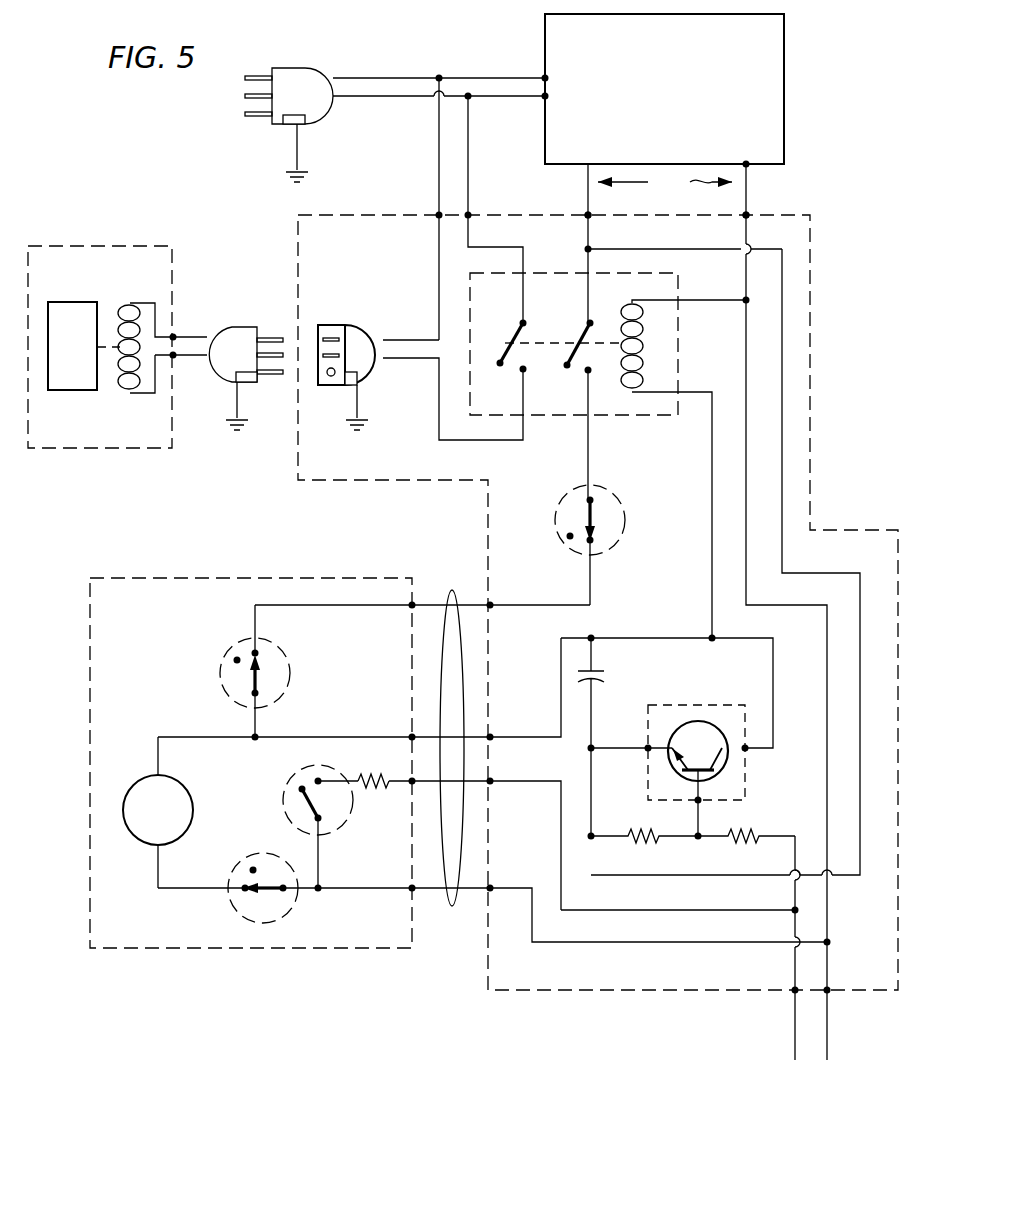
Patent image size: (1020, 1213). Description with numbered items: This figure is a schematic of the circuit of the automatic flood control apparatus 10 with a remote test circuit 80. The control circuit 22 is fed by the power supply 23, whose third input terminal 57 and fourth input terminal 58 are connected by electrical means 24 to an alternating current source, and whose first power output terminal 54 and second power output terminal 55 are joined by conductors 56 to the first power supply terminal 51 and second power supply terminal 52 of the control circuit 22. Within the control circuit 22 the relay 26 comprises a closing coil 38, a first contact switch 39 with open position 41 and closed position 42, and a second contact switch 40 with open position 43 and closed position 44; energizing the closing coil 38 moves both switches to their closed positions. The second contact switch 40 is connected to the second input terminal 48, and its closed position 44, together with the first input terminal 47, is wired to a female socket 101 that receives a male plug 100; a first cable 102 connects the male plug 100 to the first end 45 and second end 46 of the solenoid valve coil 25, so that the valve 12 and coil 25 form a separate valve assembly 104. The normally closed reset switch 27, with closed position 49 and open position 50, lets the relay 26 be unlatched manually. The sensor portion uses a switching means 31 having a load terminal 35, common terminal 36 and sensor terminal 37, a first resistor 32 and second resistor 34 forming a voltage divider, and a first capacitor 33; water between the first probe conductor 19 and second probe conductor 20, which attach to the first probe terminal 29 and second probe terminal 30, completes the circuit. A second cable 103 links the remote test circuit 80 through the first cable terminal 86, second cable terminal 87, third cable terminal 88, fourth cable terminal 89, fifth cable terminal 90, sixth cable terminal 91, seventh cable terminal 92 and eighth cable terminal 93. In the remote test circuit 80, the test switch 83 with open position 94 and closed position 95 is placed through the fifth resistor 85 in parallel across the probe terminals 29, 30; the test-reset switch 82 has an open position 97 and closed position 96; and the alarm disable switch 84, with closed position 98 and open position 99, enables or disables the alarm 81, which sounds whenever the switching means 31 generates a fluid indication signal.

The automatic flood control apparatus 10 is at (464, 1022).
The valve assembly 12 is at (84, 361).
The first probe conductor 19 is at (830, 1060).
The second probe conductor 20 is at (790, 1060).
The control circuit 22 is at (812, 423).
The power supply 23 is at (690, 101).
The electrical means 24 is at (305, 74).
The solenoid valve coil 25 is at (118, 310).
The relay 26 is at (604, 417).
The reset switch 27 is at (628, 530).
The first probe terminal 29 is at (829, 994).
The second probe terminal 30 is at (793, 993).
The switching means 31 is at (707, 722).
The first resistor 32 is at (655, 850).
The first capacitor 33 is at (604, 680).
The second resistor 34 is at (745, 850).
The load terminal 35 is at (748, 747).
The common terminal 36 is at (648, 746).
The sensor terminal 37 is at (700, 801).
The closing coil 38 is at (645, 350).
The first contact switch 39 is at (582, 349).
The second contact switch 40 is at (513, 349).
The open position 41 is at (569, 368).
The closed position 42 is at (590, 373).
The open position 43 is at (503, 366).
The closed position 44 is at (524, 372).
The first end 45 is at (174, 336).
The second end 46 is at (174, 358).
The first input terminal 47 is at (439, 214).
The second input terminal 48 is at (469, 214).
The closed position 49 is at (594, 543).
The open position 50 is at (568, 540).
The first power supply terminal 51 is at (590, 216).
The second power supply terminal 52 is at (749, 215).
The first power output terminal 54 is at (586, 170).
The second power output terminal 55 is at (749, 165).
The conductors 56 is at (665, 183).
The third input terminal 57 is at (548, 78).
The fourth input terminal 58 is at (548, 96).
The remote test circuit 80 is at (348, 948).
The alarm 81 is at (146, 842).
The test-reset switch 82 is at (292, 682).
The test switch 83 is at (343, 790).
The alarm disable switch 84 is at (262, 925).
The fifth resistor 85 is at (375, 792).
The first cable terminal 86 is at (412, 600).
The second cable terminal 87 is at (411, 735).
The third cable terminal 88 is at (412, 785).
The fourth cable terminal 89 is at (411, 892).
The fifth cable terminal 90 is at (489, 601).
The sixth cable terminal 91 is at (491, 735).
The seventh cable terminal 92 is at (491, 780).
The eighth cable terminal 93 is at (491, 888).
The open position 94 is at (300, 790).
The closed position 95 is at (316, 781).
The closed position 96 is at (258, 652).
The open position 97 is at (236, 658).
The closed position 98 is at (240, 906).
The open position 99 is at (252, 867).
The male plug 100 is at (237, 327).
The female socket 101 is at (388, 298).
The first cable 102 is at (205, 332).
The second cable 103 is at (452, 908).
The separate valve assembly 104 is at (84, 246).